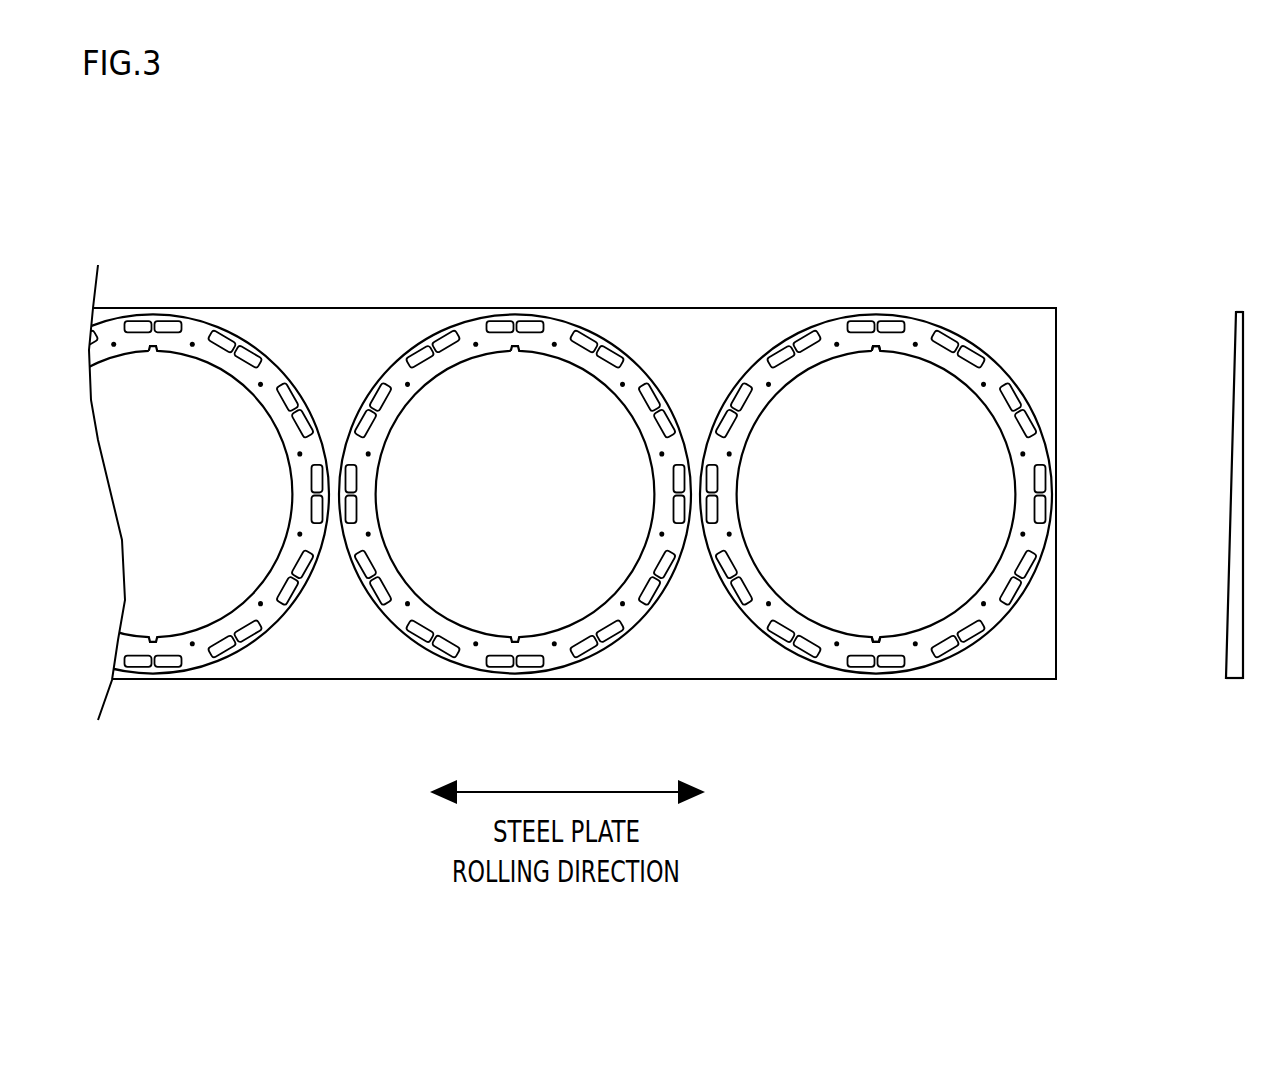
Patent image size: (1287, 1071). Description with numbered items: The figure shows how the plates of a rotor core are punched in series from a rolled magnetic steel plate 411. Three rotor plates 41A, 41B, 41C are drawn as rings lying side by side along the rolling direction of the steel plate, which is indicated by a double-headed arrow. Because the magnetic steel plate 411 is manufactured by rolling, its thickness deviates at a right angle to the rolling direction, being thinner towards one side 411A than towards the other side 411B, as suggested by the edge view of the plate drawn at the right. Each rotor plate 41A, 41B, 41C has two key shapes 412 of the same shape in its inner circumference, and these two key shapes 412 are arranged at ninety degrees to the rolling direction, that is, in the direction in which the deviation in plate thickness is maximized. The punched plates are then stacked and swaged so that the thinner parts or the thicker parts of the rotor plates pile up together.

The magnetic steel plate 411 is at (327, 633).
The one side of the steel plate 411A is at (1237, 309).
The other side of the steel plate 411B is at (1232, 681).
The rotor plate 41A is at (832, 342).
The rotor plate 41B is at (553, 343).
The rotor plate 41C is at (189, 338).
The key shape 412 is at (875, 353).